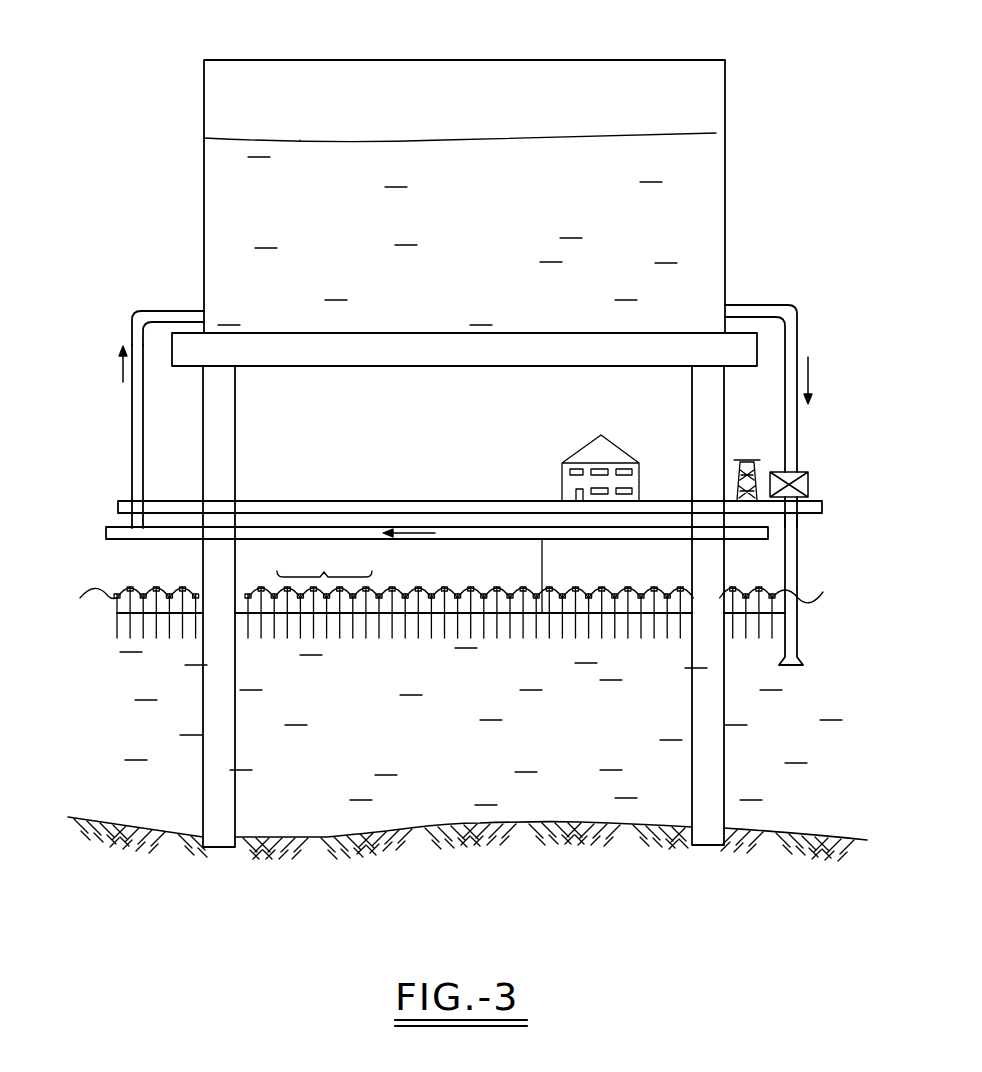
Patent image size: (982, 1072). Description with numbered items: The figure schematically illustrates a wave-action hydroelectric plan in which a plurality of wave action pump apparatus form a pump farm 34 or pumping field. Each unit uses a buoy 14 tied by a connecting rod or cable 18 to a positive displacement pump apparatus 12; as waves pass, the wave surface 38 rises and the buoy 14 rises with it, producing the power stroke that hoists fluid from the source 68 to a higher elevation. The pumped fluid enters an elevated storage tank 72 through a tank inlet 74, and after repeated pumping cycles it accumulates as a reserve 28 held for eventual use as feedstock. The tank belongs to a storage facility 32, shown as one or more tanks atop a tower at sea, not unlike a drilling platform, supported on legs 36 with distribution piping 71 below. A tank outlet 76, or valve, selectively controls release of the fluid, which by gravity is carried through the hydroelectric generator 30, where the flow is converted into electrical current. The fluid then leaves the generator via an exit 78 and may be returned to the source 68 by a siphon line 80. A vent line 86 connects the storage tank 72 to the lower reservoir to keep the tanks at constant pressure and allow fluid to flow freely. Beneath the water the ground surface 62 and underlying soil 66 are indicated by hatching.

The positive displacement pump apparatus 12 is at (116, 628).
The buoy 14 is at (117, 592).
The connecting rod or cable 18 is at (116, 605).
The reserve 28 is at (443, 138).
The hydroelectric generator 30 is at (808, 484).
The storage facility 32 is at (779, 194).
The pump farm 34 is at (324, 559).
The support leg 36 is at (215, 462).
The wave surface 38 is at (420, 588).
The ground surface 62 is at (310, 837).
The soil 66 is at (407, 830).
The source 68 is at (533, 783).
The distribution pipe 71 is at (110, 530).
The storage tank 72 is at (204, 110).
The tank inlet 74 is at (202, 313).
The tank outlet 76 is at (727, 307).
The exit 78 is at (790, 512).
The siphon line 80 is at (791, 555).
The vent line 86 is at (133, 423).